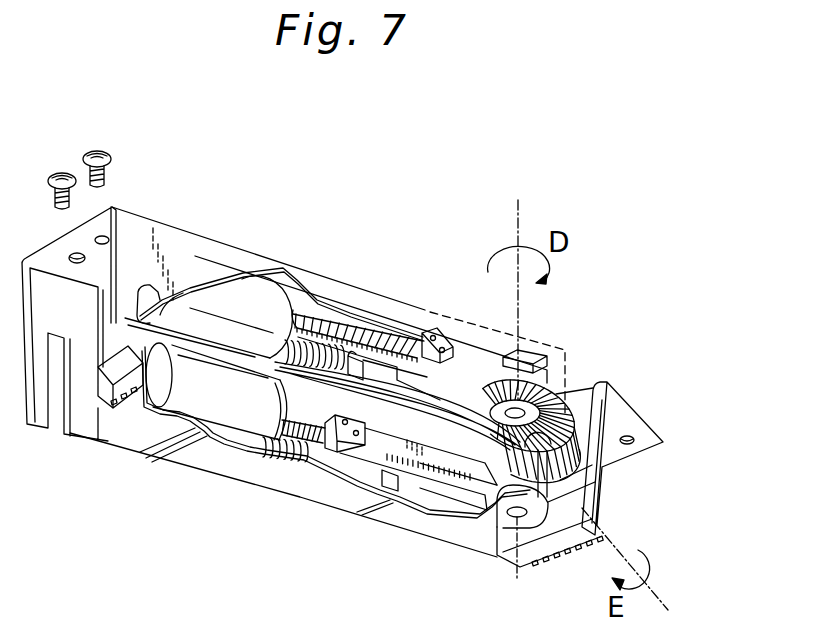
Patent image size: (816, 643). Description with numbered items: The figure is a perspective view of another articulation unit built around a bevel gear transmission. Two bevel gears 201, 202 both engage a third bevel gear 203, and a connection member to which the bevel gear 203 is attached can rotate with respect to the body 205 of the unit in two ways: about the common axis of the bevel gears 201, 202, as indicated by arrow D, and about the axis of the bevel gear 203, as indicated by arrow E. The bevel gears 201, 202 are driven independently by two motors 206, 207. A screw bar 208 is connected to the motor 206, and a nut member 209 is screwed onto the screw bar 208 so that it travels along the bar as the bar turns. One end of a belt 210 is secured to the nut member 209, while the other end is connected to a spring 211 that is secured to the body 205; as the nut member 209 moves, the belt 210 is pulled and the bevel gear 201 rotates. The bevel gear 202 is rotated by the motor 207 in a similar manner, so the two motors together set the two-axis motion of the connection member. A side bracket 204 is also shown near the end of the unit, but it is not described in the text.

The bevel gear 201 is at (548, 383).
The bevel gear 202 is at (502, 468).
The bevel gear 203 is at (592, 495).
The side bracket 204 is at (652, 390).
The body 205 is at (388, 517).
The motor 206 is at (266, 293).
The motor 207 is at (238, 441).
The screw bar 208 is at (347, 330).
The nut member 209 is at (423, 337).
The belt 210 is at (478, 357).
The spring 211 is at (322, 323).